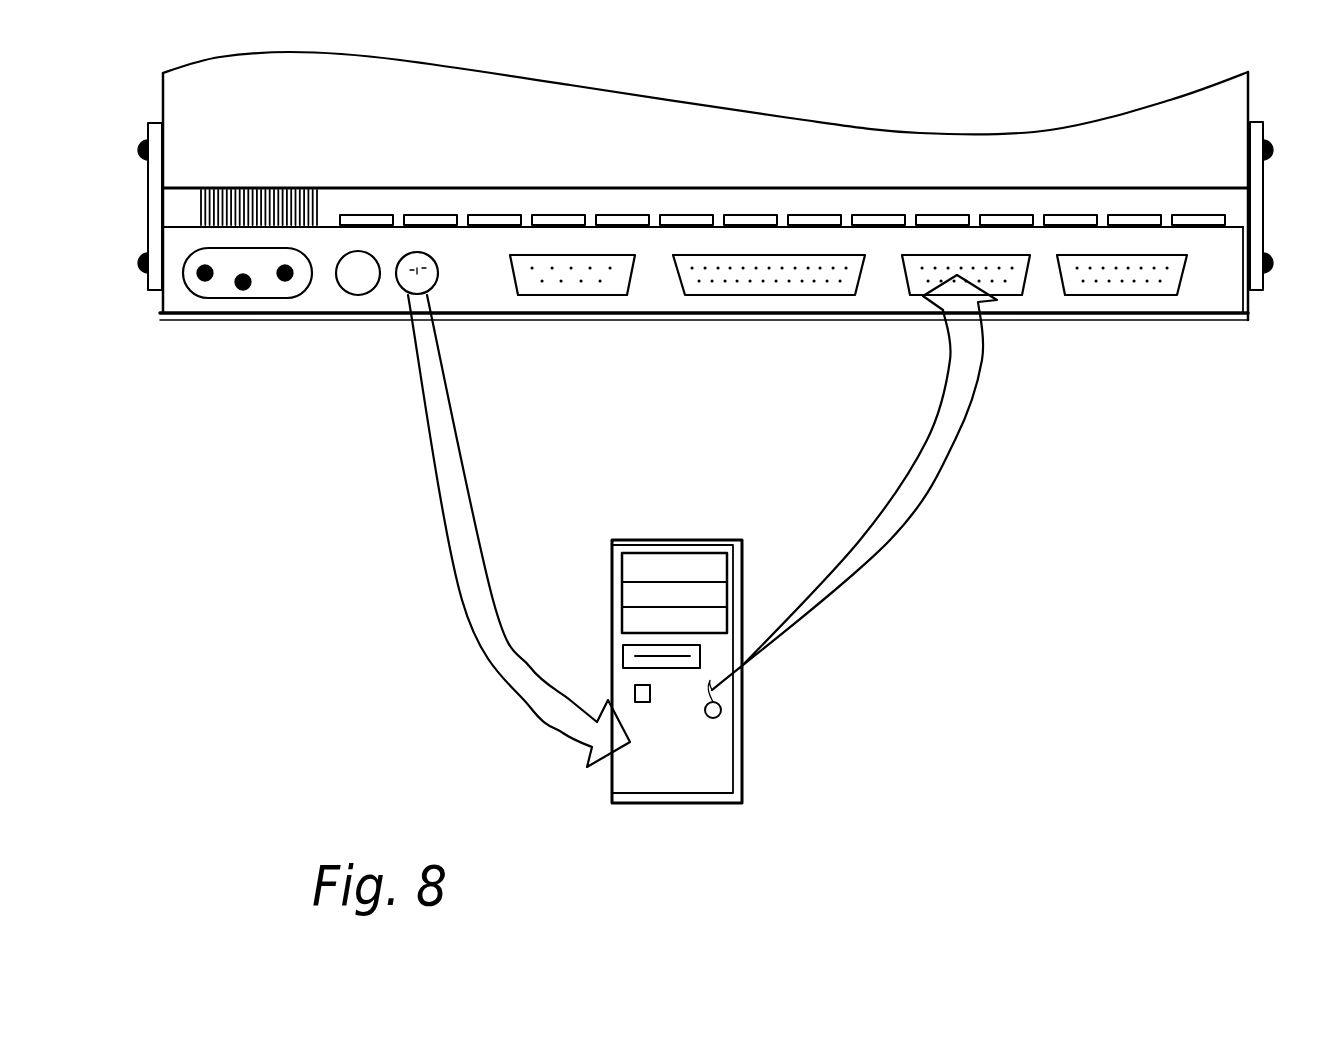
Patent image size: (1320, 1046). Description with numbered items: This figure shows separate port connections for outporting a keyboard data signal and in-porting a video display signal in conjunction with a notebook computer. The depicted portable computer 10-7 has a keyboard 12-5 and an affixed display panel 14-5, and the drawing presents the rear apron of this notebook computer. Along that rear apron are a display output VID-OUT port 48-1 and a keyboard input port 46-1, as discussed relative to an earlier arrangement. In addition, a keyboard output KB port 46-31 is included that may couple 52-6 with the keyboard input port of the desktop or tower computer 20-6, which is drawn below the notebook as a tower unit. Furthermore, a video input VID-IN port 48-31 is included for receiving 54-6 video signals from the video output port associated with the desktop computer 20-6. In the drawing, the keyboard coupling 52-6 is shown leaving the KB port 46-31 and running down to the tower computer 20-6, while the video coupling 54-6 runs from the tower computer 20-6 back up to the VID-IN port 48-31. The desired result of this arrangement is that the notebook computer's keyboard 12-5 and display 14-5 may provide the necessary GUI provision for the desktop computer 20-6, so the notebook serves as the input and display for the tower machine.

The portable computer 10-7 is at (220, 322).
The affixed display panel 14-5 is at (795, 118).
The keyboard 12-5 is at (1000, 222).
The keyboard input port 46-1 is at (350, 300).
The keyboard output KB port 46-31 is at (453, 272).
The keyboard coupling 52-6 is at (462, 520).
The video input VID-IN port 48-31 is at (912, 288).
The display output VID-OUT port 48-1 is at (1196, 286).
The video signal coupling 54-6 is at (957, 447).
The desktop or tower computer 20-6 is at (745, 775).